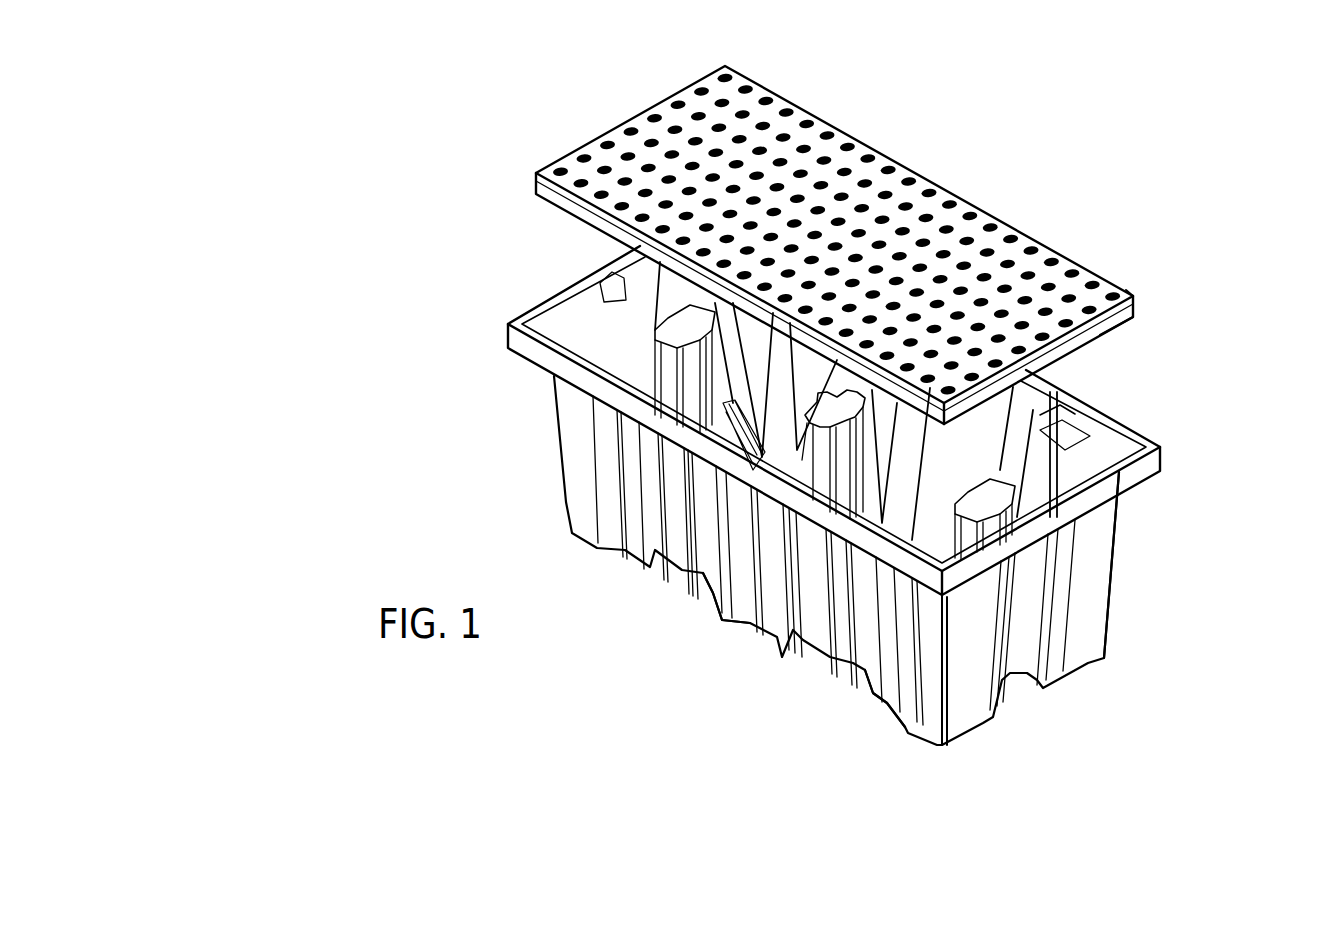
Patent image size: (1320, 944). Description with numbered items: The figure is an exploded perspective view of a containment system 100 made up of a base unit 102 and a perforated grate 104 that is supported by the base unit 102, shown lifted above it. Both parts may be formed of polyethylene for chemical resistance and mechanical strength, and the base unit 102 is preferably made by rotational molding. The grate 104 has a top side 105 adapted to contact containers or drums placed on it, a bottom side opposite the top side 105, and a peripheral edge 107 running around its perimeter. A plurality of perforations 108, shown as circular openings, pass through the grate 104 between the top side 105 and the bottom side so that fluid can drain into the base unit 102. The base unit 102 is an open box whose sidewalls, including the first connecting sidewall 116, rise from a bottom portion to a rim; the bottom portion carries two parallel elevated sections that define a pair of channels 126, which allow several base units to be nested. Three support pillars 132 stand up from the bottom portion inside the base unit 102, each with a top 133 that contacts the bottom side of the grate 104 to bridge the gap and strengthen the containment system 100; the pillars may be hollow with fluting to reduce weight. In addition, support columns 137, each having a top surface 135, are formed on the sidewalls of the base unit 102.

The containment system 100 is at (307, 167).
The base unit 102 is at (565, 445).
The perforated grate 104 is at (562, 156).
The top side 105 is at (1110, 287).
The peripheral edge 107 is at (1103, 327).
The perforations 108 is at (727, 68).
The first connecting sidewall 116 is at (1087, 560).
The channels 126 is at (680, 576).
The support pillar 132 is at (707, 353).
The top 133 is at (690, 320).
The top surface 135 is at (1050, 420).
The support columns 137 is at (1063, 457).